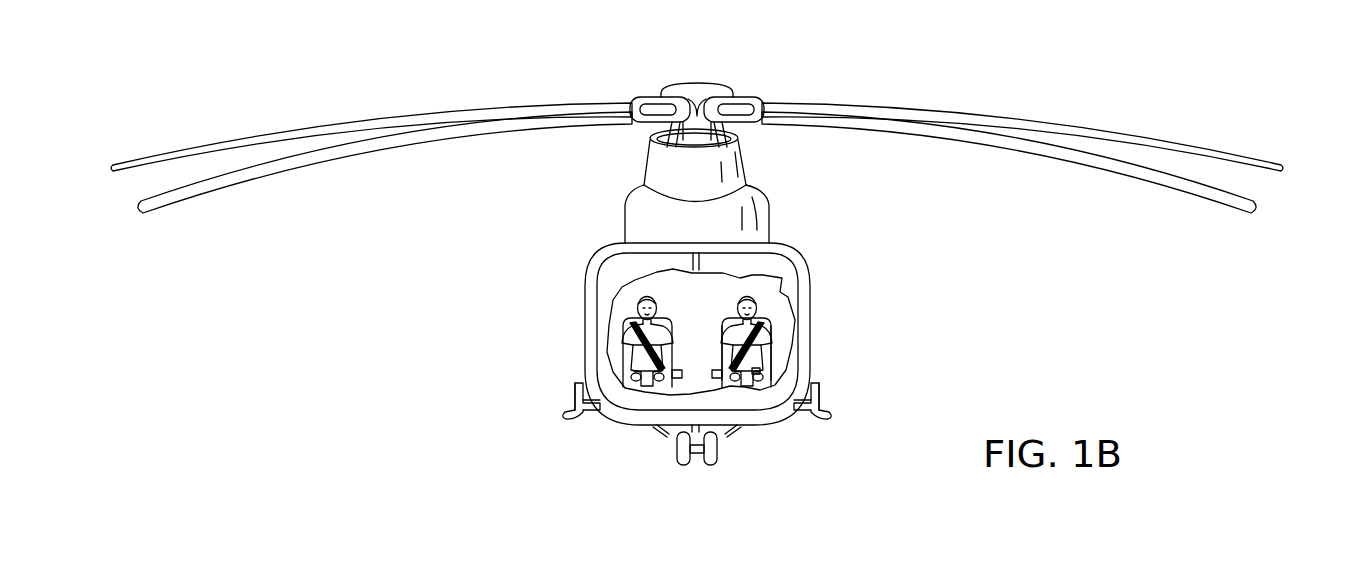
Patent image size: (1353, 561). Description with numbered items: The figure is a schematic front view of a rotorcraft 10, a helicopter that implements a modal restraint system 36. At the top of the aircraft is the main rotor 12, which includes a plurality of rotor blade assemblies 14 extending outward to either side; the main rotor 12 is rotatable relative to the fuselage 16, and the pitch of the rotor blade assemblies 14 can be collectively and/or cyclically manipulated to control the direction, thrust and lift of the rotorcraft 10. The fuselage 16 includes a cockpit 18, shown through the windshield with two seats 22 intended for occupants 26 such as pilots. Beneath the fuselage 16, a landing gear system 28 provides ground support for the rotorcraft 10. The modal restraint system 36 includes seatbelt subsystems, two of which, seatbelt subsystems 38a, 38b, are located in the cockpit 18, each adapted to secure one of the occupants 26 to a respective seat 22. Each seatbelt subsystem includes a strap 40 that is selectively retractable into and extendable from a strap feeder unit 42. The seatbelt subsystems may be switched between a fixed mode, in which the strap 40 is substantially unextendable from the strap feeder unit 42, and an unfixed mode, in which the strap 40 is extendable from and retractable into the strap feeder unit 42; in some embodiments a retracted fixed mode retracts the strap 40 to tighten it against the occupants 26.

The rotorcraft 10 is at (543, 55).
The main rotor 12 is at (680, 83).
The rotor blade assemblies 14 is at (1073, 126).
The fuselage 16 is at (626, 426).
The cockpit 18 is at (771, 278).
The seats 22 is at (755, 302).
The occupants 26 is at (640, 296).
The landing gear system 28 is at (720, 450).
The modal restraint system 36 is at (762, 303).
The seatbelt subsystem 38a is at (665, 338).
The seatbelt subsystem 38b is at (757, 383).
The strap 40 is at (756, 371).
The strap feeder unit 42 is at (790, 333).